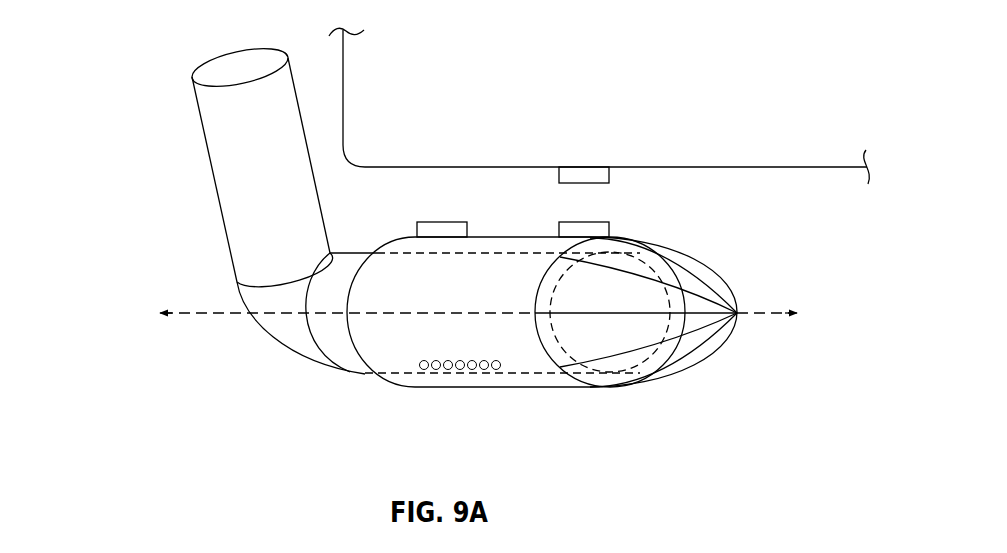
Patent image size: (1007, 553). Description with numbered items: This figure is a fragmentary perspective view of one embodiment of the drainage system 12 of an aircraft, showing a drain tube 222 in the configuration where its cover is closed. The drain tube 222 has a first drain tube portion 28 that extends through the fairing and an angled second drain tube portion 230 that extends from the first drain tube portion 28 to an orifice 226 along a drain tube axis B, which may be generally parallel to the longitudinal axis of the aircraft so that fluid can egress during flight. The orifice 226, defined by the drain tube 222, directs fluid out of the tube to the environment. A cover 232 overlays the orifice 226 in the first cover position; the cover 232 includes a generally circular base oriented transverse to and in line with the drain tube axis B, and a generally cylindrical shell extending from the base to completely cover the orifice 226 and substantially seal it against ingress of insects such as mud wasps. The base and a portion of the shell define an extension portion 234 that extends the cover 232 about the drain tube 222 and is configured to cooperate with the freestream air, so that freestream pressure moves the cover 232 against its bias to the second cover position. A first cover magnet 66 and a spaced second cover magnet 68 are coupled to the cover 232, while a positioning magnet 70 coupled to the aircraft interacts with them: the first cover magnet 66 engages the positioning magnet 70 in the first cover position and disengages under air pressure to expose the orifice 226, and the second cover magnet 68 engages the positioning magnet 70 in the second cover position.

The drainage system 12 is at (164, 99).
The first drain tube portion 28 is at (206, 138).
The first cover magnet 66 is at (462, 222).
The second cover magnet 68 is at (599, 222).
The positioning magnet 70 is at (602, 167).
The drain tube 222 is at (357, 218).
The orifice 226 is at (425, 375).
The second drain tube portion 230 is at (365, 374).
The cover 232 is at (534, 402).
The extension portion 234 is at (504, 238).
The drain tube axis B is at (768, 316).